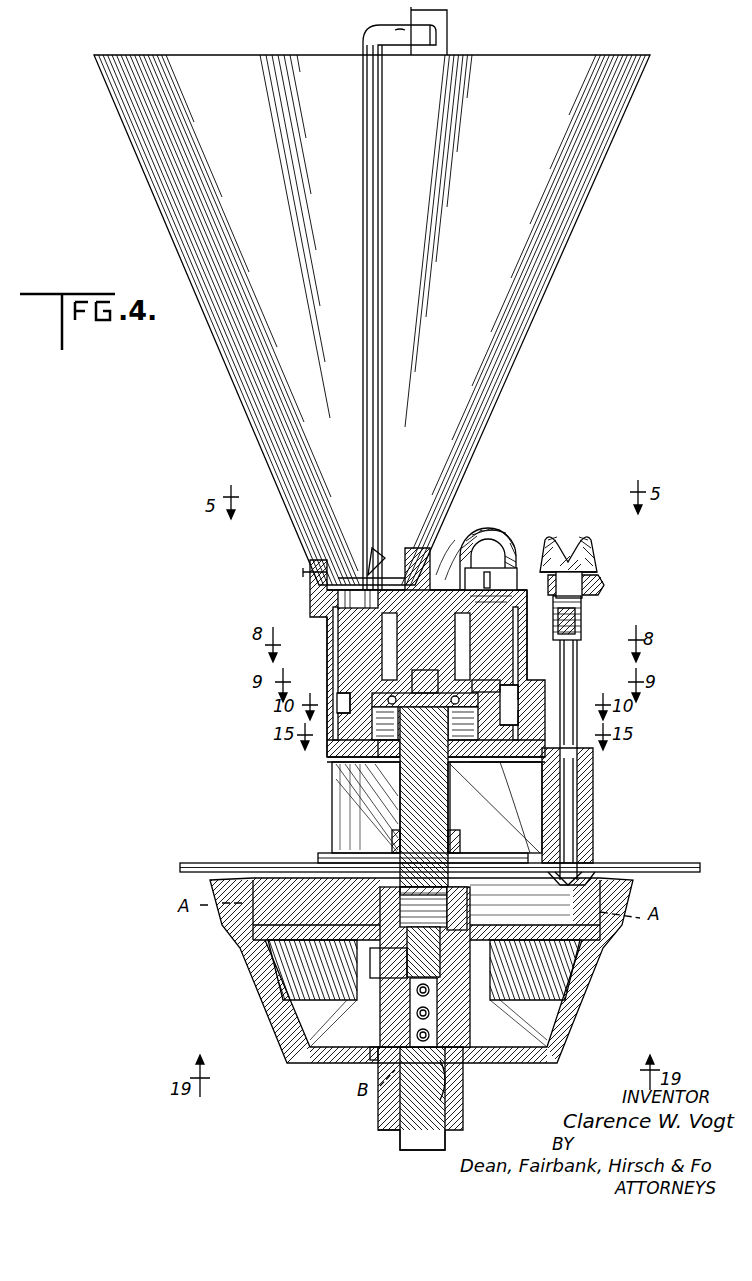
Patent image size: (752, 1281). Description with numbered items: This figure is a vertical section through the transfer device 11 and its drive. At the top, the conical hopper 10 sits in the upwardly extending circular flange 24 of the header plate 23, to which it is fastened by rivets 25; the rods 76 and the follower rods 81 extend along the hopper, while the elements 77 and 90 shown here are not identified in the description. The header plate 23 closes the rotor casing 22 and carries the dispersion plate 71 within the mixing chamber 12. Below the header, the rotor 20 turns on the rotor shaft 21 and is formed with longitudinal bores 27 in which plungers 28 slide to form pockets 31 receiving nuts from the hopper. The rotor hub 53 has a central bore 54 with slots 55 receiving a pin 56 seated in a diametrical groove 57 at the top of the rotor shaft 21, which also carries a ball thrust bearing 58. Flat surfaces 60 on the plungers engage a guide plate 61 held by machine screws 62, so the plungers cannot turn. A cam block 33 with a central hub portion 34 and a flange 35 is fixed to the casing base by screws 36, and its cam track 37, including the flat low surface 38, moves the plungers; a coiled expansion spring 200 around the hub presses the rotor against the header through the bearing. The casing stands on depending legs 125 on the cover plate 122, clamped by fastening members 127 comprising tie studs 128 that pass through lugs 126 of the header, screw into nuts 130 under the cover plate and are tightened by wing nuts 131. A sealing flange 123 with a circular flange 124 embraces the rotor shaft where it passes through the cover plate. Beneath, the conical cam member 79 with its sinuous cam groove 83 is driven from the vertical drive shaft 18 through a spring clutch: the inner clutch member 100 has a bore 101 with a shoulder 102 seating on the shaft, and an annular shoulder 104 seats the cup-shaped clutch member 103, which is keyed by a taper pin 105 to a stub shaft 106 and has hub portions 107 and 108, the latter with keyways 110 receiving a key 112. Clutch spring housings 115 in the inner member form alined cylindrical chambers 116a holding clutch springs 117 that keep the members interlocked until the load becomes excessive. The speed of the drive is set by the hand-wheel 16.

The conical hopper 10 is at (580, 205).
The rods 76 is at (365, 218).
The tube bend 90 is at (398, 32).
The cam follower rods 81 is at (447, 20).
The clamp block 77 is at (378, 548).
The transfer or conveyer device 11 is at (445, 590).
The header plate 23 is at (470, 545).
The dispersion plate 71 is at (483, 572).
The mixing chamber 12 is at (520, 555).
The wing nuts 131 is at (582, 548).
The rotor 20 is at (565, 575).
The lugs 126 is at (598, 588).
The rotor hub 53 is at (575, 616).
The slots 55 is at (578, 630).
The fastening members 127 is at (580, 660).
The tie studs 128 is at (568, 805).
The circular flange 24 is at (312, 560).
The rivets 25 is at (303, 572).
The pockets 31 is at (338, 597).
The longitudinal bores 27 is at (330, 632).
The plungers 28 is at (333, 660).
The diametrical groove 57 is at (425, 698).
The ball thrust bearing 58 is at (372, 712).
The coiled expansion spring 200 is at (337, 718).
The central bore 54 is at (500, 685).
The machine screws 62 is at (478, 707).
The pin 56 is at (478, 712).
The guide plate 61 is at (518, 715).
The flat surfaces 60 is at (518, 732).
The flange 35 is at (327, 748).
The rotor casing 22 is at (330, 762).
The screws 36 is at (400, 765).
The hand-wheel 16 is at (443, 816).
The rotor shaft 21 is at (380, 790).
The cam block 33 is at (455, 765).
The hub portion 34 is at (470, 775).
The cam track 37 is at (505, 765).
The flat low surface 38 is at (496, 807).
The circular flange 124 is at (392, 838).
The sealing flange 123 is at (320, 858).
The cover plate 122 is at (700, 870).
The depending legs 125 is at (593, 782).
The conical cam member 79 is at (580, 1010).
The cam groove 83 is at (240, 940).
The hub portion 108 is at (380, 930).
The keyways 110 is at (467, 890).
The key 112 is at (400, 890).
The stub shaft 106 is at (467, 915).
The nuts 130 is at (600, 890).
The taper pin 105 is at (440, 963).
The hub portion 107 is at (478, 975).
The cup-shaped clutch member 103 is at (360, 1010).
The clutch spring housings 115 is at (430, 1000).
The alined cylindrical chambers 116a is at (430, 1013).
The clutch spring 117 is at (417, 1035).
The inner clutch member 100 is at (463, 1105).
The shoulder 102 is at (463, 1080).
The annular shoulder 104 is at (378, 1075).
The bore 101 is at (380, 1100).
The drive shaft 18 is at (445, 1145).